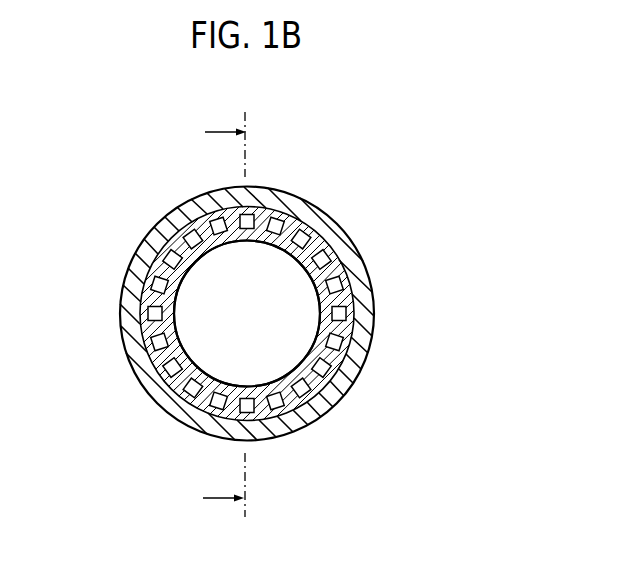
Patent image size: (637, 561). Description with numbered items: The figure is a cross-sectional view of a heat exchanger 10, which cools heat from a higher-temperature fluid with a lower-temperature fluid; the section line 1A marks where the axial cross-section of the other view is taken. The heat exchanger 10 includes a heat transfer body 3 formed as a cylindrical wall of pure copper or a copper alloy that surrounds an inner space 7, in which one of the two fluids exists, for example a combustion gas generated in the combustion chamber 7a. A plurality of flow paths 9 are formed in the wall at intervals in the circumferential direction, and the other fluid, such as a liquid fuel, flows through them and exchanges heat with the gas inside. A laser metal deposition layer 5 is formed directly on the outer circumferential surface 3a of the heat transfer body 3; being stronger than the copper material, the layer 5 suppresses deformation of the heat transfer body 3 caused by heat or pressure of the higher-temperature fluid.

The heat exchanger 10 is at (128, 204).
The line 1A- 1A is at (224, 318).
The heat transfer body 3 is at (273, 314).
The outer circumferential surface 3a is at (348, 365).
The laser metal deposition layer 5 is at (366, 312).
The inner space 7 is at (200, 312).
The combustion chamber 7a is at (259, 327).
The flow path 9 is at (168, 370).